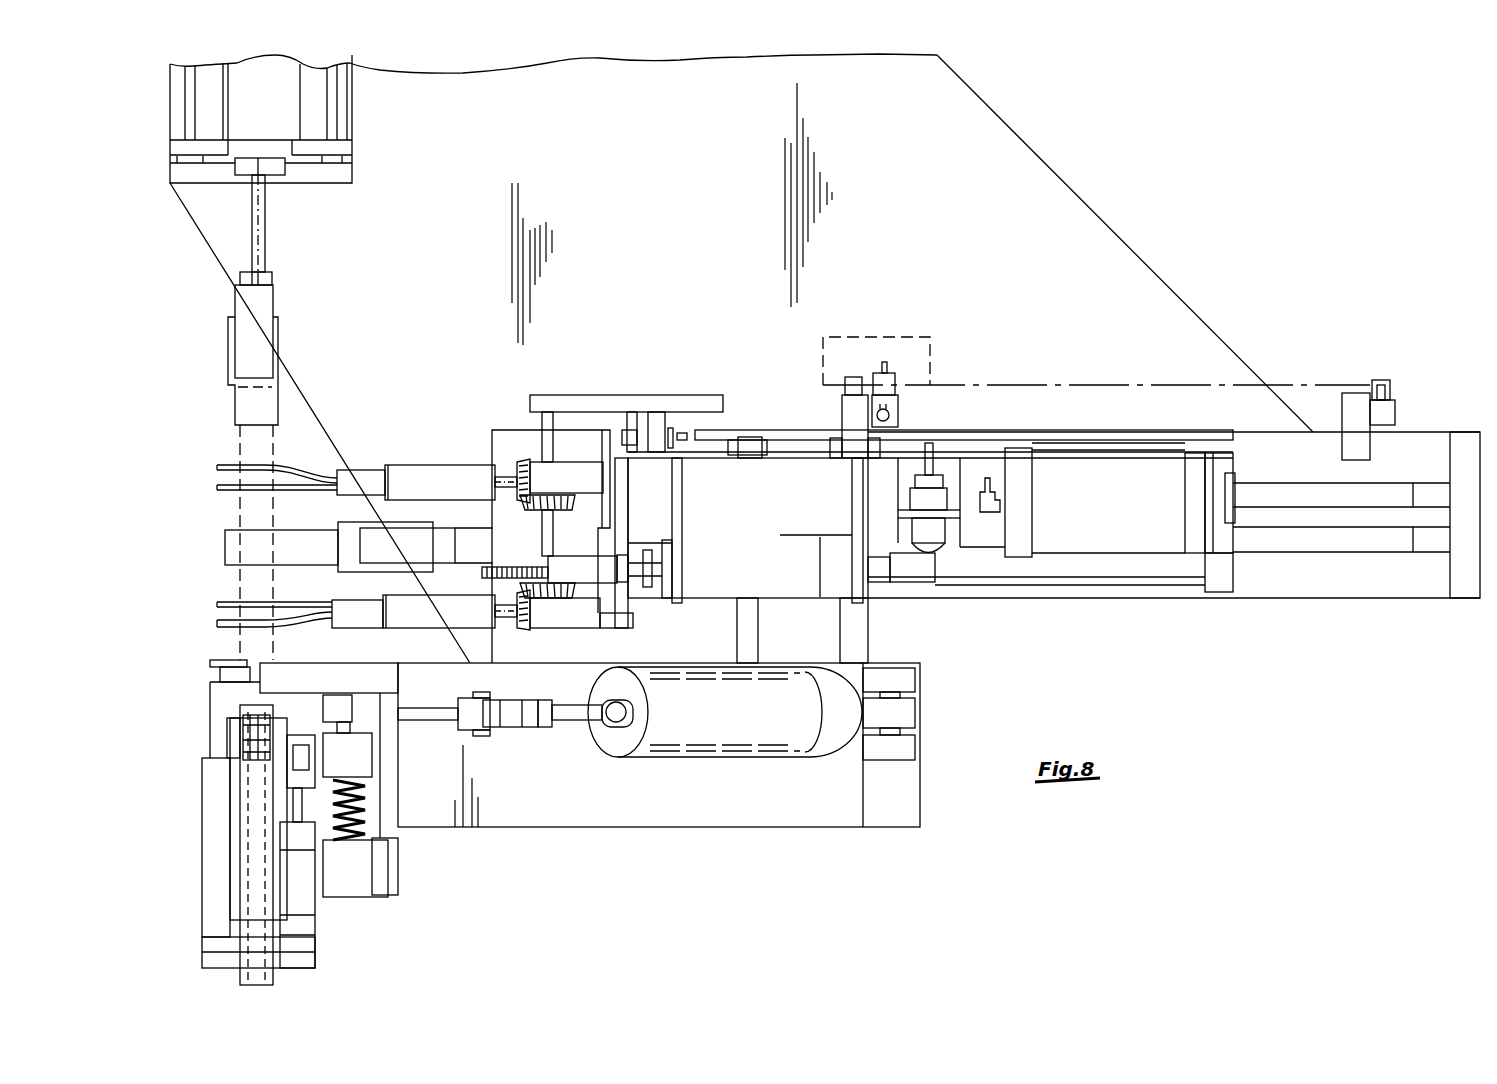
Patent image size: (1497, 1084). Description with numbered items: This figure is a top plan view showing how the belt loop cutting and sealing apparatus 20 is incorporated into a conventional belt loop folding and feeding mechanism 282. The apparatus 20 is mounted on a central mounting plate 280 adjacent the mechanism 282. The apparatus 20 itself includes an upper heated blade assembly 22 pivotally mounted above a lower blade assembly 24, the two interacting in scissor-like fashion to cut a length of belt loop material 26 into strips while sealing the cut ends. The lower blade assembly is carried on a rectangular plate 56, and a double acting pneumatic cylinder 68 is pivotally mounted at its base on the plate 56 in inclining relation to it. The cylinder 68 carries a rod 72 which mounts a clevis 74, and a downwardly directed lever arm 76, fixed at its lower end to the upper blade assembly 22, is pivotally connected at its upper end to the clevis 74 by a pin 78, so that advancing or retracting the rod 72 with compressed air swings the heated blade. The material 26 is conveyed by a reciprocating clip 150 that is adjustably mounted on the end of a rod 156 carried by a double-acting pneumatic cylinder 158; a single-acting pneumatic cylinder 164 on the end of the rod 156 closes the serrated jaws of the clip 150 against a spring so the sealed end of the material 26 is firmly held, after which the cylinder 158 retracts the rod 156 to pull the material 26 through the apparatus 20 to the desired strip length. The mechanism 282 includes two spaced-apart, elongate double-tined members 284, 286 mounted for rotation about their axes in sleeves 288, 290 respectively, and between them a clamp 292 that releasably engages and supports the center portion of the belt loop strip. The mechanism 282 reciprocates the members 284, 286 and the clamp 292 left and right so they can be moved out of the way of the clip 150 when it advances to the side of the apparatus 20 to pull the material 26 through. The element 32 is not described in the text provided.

The belt loop cutting and sealing apparatus 20 is at (930, 706).
The upper heated blade assembly 22 is at (392, 691).
The lower blade assembly 24 is at (208, 685).
The belt loop material 26 is at (228, 708).
The stop plate 32 is at (243, 659).
The rectangular plate 56 is at (754, 830).
The double acting pneumatic cylinder 68 is at (702, 745).
The rod 72 is at (567, 727).
The clevis 74 is at (519, 729).
The lever arm 76 is at (427, 723).
The pin 78 is at (483, 733).
The reciprocating clip 150 is at (283, 393).
The rod 156 is at (267, 214).
The double-acting pneumatic cylinder 158 is at (224, 148).
The single-acting pneumatic cylinder 164 is at (275, 293).
The central mounting plate 280 is at (1022, 135).
The belt loop folding and feeding mechanism 282 is at (607, 394).
The double-tined member 284 is at (342, 626).
The double-tined member 286 is at (363, 466).
The sleeve 288 is at (480, 630).
The sleeve 290 is at (428, 463).
The clamp 292 is at (356, 520).